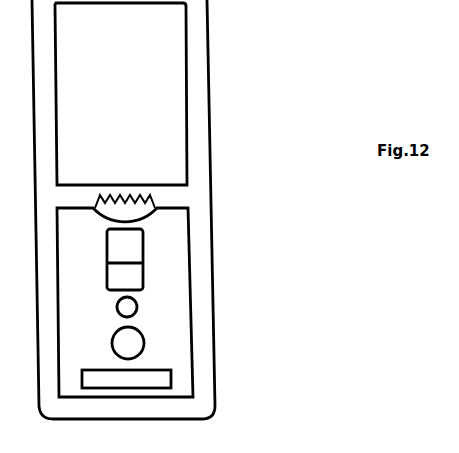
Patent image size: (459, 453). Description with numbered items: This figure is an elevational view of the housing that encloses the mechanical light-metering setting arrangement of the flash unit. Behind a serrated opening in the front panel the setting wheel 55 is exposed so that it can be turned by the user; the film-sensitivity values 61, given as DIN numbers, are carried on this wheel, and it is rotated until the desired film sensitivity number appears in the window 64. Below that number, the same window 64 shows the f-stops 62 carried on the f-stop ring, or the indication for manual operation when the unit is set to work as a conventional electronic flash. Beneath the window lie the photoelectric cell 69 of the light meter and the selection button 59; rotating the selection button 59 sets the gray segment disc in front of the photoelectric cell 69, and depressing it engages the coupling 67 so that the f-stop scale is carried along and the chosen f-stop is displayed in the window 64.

The coupling 67 is at (277, 2).
The setting wheel 55 is at (127, 217).
The film-sensitivity values 61 is at (133, 250).
The window 64 is at (136, 261).
The f-stops 62 is at (128, 280).
The photoelectric cell 69 is at (127, 306).
The selection button 59 is at (128, 341).